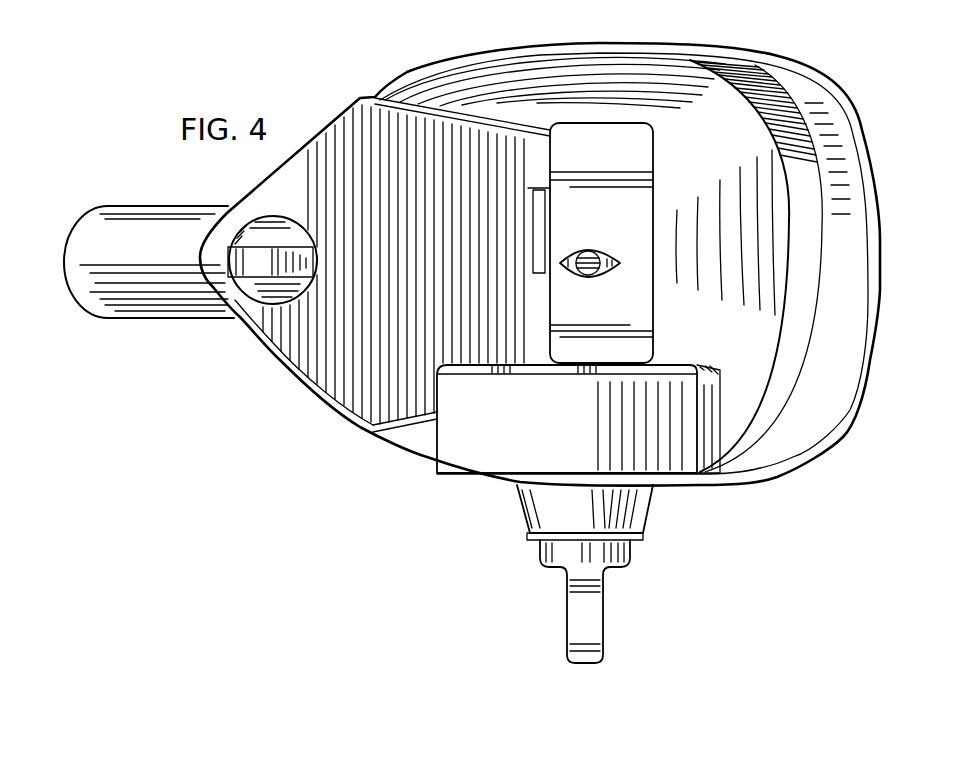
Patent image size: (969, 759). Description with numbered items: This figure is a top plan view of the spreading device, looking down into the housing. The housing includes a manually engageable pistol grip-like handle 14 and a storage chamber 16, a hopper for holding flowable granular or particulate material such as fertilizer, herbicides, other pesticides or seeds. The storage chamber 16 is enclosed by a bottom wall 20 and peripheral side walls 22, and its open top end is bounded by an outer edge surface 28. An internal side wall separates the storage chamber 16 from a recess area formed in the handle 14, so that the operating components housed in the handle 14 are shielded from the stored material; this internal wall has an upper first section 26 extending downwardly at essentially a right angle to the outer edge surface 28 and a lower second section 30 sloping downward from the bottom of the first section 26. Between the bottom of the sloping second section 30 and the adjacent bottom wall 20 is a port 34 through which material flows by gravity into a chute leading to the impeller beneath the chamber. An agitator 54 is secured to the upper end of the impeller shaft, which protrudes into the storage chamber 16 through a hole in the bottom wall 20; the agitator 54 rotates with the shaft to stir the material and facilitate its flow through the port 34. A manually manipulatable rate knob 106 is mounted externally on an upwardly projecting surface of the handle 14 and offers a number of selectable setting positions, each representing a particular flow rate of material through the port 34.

The handle 14 is at (180, 303).
The storage chamber 16 is at (710, 80).
The bottom wall 20 is at (614, 170).
The peripheral side walls 22 is at (574, 75).
The first section 26 is at (390, 158).
The outer edge surface 28 is at (625, 45).
The second section 30 is at (520, 345).
The port 34 is at (540, 262).
The agitator 54 is at (590, 258).
The rate knob 106 is at (263, 265).